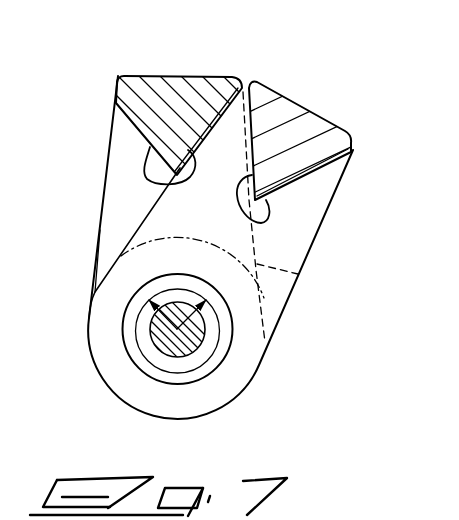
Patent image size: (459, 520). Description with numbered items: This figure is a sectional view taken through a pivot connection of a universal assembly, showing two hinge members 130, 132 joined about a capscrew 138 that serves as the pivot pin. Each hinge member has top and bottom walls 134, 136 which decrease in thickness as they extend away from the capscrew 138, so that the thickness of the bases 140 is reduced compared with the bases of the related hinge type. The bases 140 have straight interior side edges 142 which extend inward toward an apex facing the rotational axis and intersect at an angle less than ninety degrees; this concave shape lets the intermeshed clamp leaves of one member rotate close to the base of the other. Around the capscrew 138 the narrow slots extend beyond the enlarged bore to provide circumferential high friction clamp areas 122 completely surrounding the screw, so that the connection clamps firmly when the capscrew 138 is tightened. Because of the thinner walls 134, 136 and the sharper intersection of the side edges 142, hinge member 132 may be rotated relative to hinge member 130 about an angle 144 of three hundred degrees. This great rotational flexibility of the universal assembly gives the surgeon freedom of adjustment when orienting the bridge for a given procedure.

The high friction clamp area 122 is at (104, 349).
The hinge member 130 is at (143, 75).
The hinge member 132 is at (285, 97).
The top wall 134 is at (140, 225).
The bottom wall 136 is at (298, 277).
The capscrew 138 is at (194, 347).
The base 140 is at (187, 97).
The straight interior side edge 142 is at (206, 195).
The angle of rotation 144 is at (196, 375).